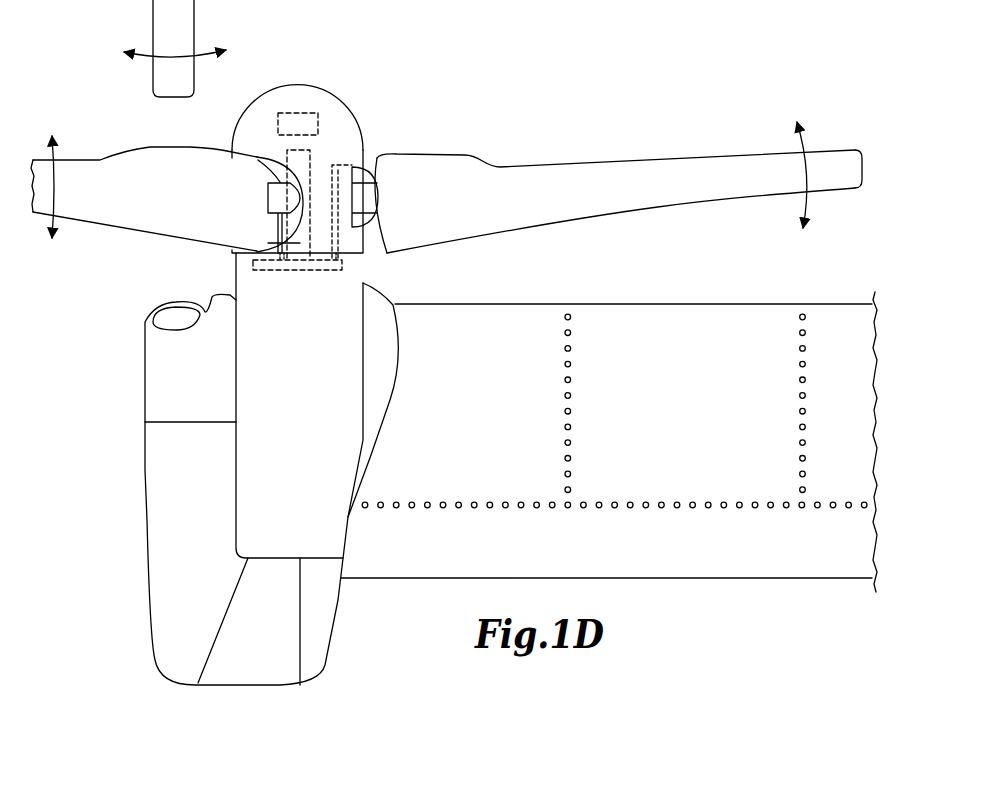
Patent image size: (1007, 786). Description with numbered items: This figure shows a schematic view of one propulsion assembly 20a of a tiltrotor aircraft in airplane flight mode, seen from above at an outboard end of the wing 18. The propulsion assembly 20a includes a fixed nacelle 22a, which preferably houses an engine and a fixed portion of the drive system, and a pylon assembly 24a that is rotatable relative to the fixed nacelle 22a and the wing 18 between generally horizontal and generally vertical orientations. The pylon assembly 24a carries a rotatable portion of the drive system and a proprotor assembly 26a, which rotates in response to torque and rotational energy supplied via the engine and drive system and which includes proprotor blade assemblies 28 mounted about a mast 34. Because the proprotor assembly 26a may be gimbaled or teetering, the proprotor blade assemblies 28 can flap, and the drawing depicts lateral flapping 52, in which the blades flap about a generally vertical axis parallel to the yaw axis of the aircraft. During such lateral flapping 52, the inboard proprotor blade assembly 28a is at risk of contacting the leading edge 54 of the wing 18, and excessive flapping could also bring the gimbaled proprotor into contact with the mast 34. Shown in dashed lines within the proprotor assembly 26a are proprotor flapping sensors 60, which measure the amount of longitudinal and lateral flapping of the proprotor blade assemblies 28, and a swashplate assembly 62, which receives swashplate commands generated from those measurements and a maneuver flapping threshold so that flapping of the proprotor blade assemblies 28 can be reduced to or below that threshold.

The wing 18 is at (609, 441).
The propulsion assembly 20a is at (226, 469).
The fixed nacelle 22a is at (150, 630).
The pylon assembly 24a is at (258, 378).
The proprotor assembly 26a is at (304, 135).
The proprotor blade assemblies 28 is at (607, 167).
The inboard proprotor blade assembly 28a is at (633, 160).
The mast 34 is at (303, 150).
The lateral flapping 52 is at (805, 146).
The leading edge 54 is at (677, 302).
The proprotor flapping sensors 60 is at (292, 112).
The swashplate assembly 62 is at (298, 272).